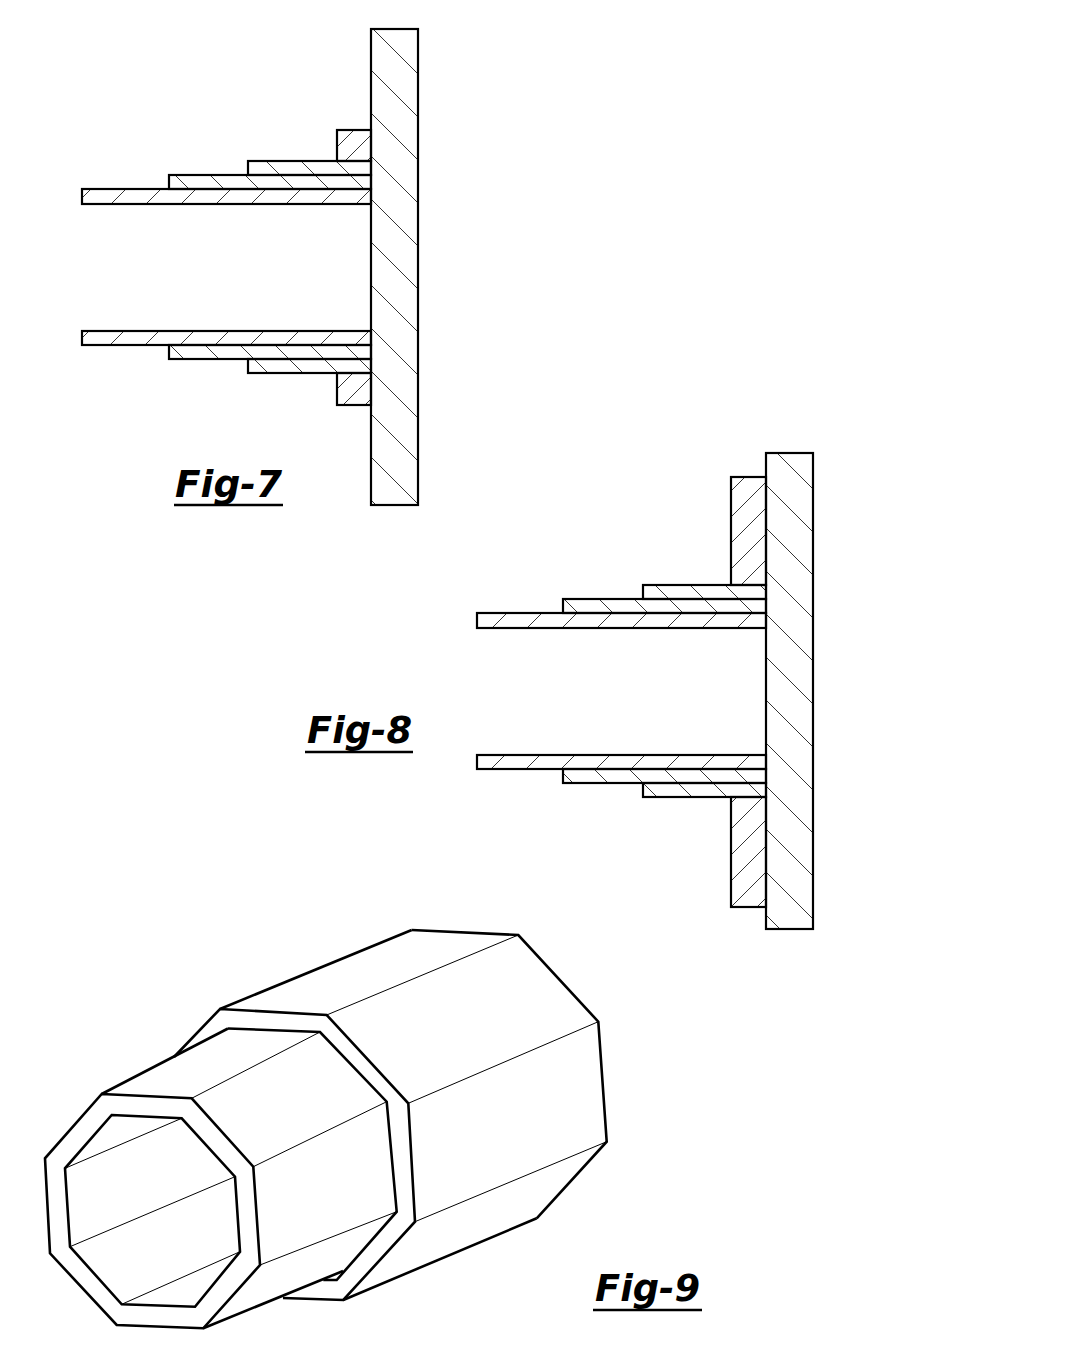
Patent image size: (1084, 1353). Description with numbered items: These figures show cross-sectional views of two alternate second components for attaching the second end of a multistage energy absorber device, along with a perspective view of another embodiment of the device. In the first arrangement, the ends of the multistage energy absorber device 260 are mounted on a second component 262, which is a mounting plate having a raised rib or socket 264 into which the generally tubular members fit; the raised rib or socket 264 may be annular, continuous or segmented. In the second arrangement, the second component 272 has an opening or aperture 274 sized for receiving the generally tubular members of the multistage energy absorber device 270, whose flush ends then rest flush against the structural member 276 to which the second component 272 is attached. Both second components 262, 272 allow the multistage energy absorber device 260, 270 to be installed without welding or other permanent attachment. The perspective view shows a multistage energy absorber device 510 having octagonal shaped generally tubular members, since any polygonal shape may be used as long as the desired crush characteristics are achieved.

In FIG. 7, the multistage energy absorber device 260 is at (204, 248).
In FIG. 7, the second component 262 is at (418, 76).
In FIG. 7, the raised rib or socket 264 is at (330, 124).
In FIG. 8, the multistage energy absorber device 270 is at (599, 692).
In FIG. 8, the second component 272 is at (749, 475).
In FIG. 8, the opening or aperture 274 is at (751, 598).
In FIG. 8, the structural member 276 is at (813, 893).
In FIG. 9, the multistage energy absorber device 510 is at (330, 897).